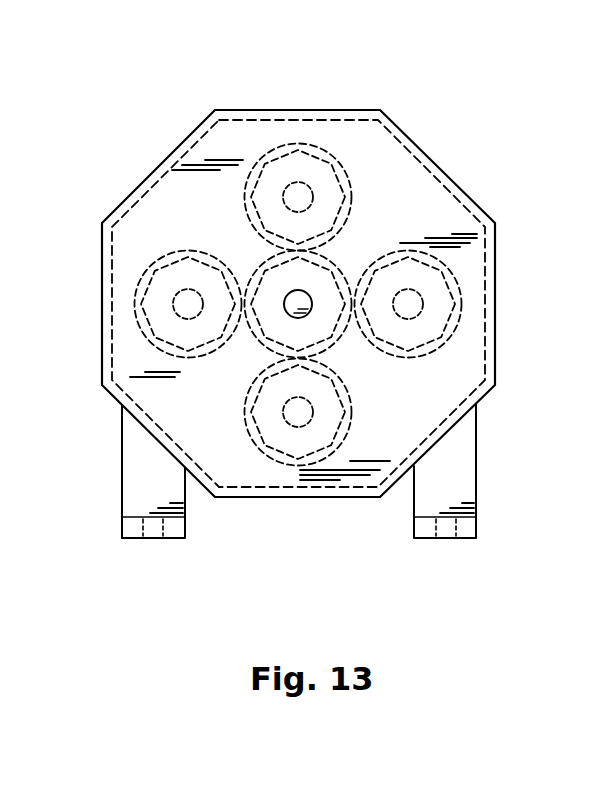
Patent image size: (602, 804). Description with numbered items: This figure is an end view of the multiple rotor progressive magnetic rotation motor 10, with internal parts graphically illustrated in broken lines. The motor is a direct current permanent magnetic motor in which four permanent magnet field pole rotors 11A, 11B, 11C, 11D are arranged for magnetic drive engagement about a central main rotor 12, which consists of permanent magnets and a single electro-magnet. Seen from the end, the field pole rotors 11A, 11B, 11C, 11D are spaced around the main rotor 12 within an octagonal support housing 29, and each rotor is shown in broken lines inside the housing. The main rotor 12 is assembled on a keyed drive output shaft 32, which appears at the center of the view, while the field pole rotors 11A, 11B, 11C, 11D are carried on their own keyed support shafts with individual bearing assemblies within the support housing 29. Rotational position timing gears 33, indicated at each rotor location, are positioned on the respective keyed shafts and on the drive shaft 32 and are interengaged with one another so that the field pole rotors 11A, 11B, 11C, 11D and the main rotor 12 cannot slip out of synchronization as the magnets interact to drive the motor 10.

The progressive magnetic rotation motor 10 is at (440, 162).
The support housing 29 is at (152, 172).
The rotational position timing gears 33 is at (302, 143).
The field pole rotor 11A is at (147, 320).
The field pole rotor 11B is at (283, 152).
The field pole rotor 11C is at (453, 320).
The field pole rotor 11D is at (313, 453).
The main rotor 12 is at (270, 342).
The keyed drive output shaft 32 is at (305, 315).